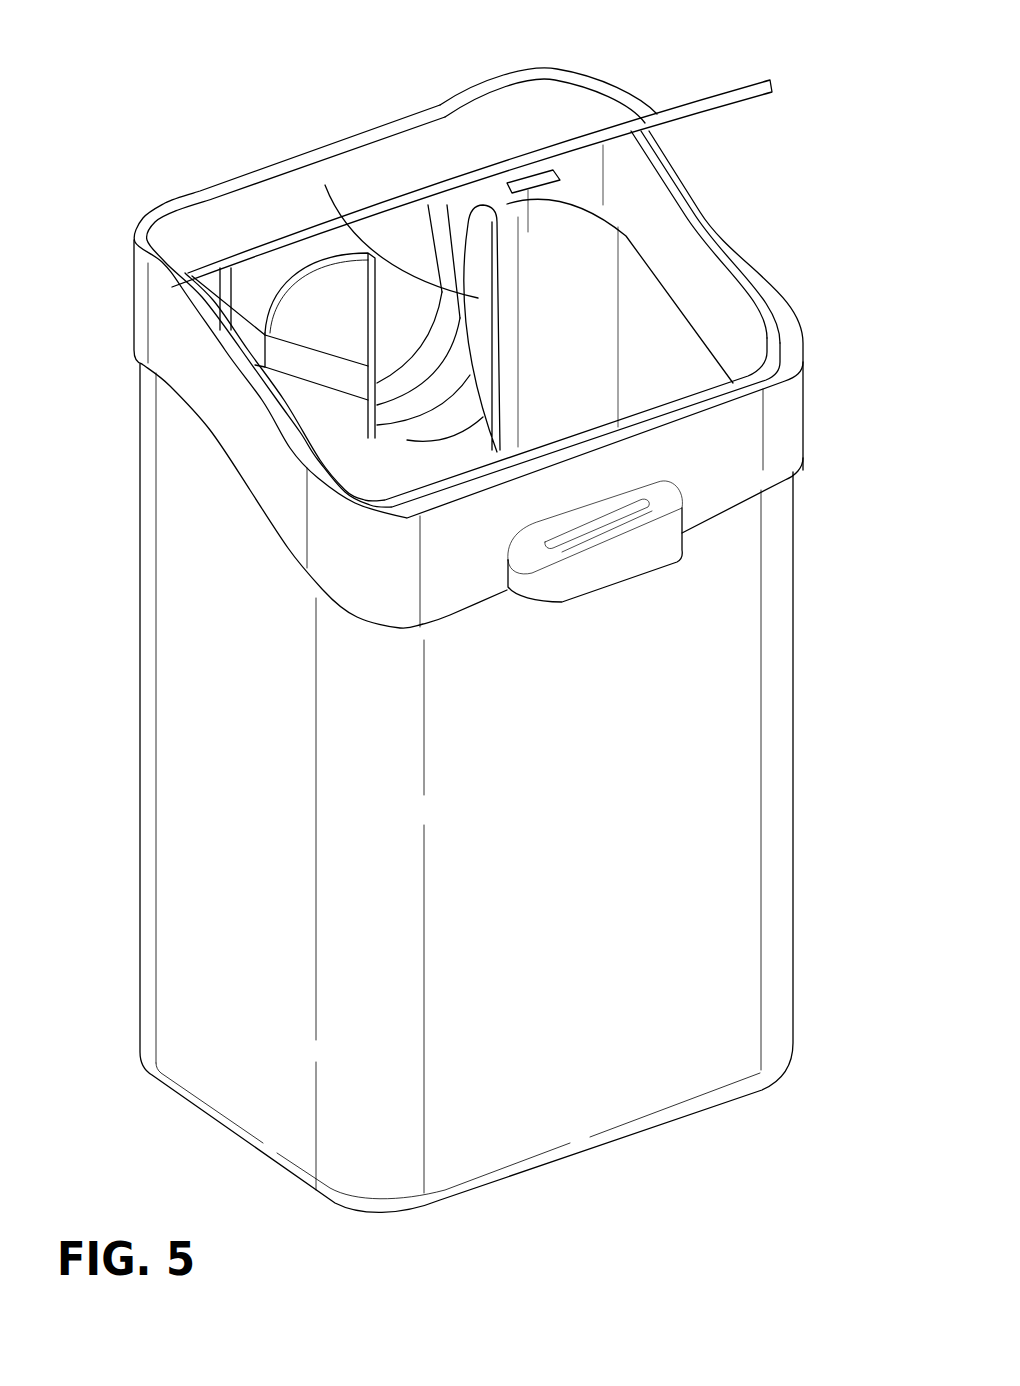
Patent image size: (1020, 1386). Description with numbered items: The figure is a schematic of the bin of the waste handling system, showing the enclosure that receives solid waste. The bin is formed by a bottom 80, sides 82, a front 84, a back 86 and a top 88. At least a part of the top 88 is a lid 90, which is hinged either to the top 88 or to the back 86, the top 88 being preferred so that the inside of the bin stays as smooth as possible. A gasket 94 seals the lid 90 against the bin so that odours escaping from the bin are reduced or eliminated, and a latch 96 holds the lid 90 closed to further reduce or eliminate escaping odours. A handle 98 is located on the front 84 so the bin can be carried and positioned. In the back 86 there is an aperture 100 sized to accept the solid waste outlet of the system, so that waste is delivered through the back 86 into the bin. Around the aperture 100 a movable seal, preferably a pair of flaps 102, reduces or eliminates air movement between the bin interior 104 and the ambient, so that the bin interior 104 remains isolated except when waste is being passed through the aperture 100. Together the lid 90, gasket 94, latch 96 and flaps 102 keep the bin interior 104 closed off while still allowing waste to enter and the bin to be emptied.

The bottom 80 is at (655, 1122).
The sides 82 is at (178, 673).
The front 84 is at (733, 683).
The back 86 is at (583, 180).
The top 88 is at (522, 97).
The lid 90 is at (683, 103).
The gasket 94 is at (780, 359).
The latch 96 is at (520, 177).
The handle 98 is at (662, 512).
The aperture 100 is at (397, 238).
The flaps 102 is at (333, 292).
The bin interior 104 is at (583, 327).